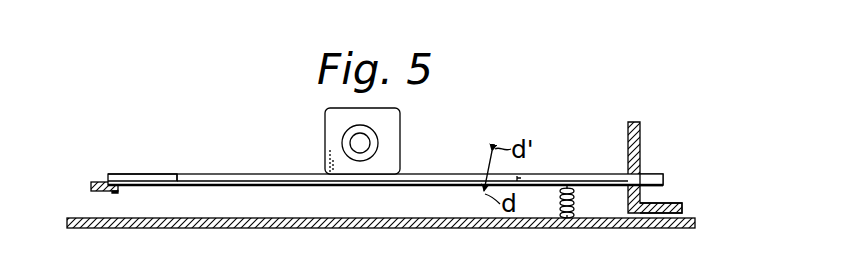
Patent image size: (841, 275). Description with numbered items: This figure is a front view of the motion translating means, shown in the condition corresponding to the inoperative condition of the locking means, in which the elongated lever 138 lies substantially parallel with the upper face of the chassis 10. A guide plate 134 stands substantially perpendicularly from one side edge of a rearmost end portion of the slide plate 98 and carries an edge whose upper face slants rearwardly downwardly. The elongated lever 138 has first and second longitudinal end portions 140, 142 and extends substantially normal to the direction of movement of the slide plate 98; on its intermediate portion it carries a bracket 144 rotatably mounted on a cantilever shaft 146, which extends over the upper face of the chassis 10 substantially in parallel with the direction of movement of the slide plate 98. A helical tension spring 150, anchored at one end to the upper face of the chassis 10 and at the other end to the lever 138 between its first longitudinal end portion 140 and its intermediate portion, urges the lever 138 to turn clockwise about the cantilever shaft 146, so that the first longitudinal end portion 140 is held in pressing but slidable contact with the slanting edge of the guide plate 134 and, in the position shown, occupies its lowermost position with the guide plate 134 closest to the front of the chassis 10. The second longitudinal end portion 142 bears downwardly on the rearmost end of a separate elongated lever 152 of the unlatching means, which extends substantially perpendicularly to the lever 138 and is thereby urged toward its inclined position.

The chassis 10 is at (129, 230).
The slide plate 98 is at (682, 205).
The guide plate 134 is at (627, 160).
The elongated lever 138 is at (244, 166).
The first longitudinal end portion 140 is at (655, 173).
The second longitudinal end portion 142 is at (117, 173).
The bracket 144 is at (398, 126).
The cantilever shaft 146 is at (369, 149).
The helical tension spring 150 is at (567, 211).
The elongated lever 152 is at (92, 181).